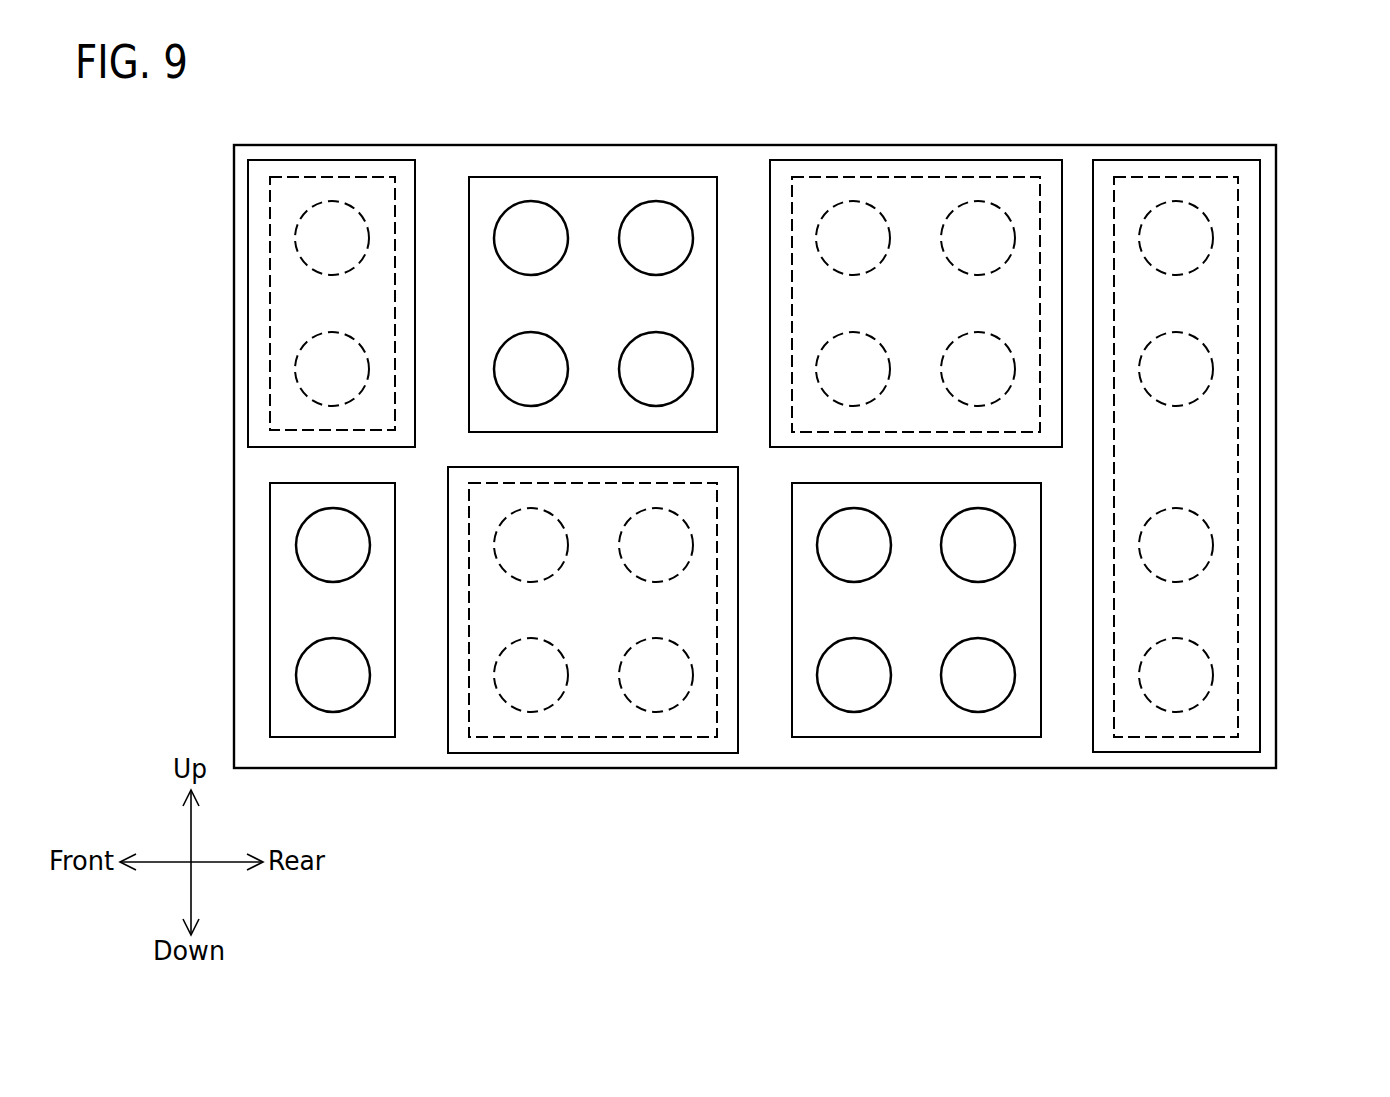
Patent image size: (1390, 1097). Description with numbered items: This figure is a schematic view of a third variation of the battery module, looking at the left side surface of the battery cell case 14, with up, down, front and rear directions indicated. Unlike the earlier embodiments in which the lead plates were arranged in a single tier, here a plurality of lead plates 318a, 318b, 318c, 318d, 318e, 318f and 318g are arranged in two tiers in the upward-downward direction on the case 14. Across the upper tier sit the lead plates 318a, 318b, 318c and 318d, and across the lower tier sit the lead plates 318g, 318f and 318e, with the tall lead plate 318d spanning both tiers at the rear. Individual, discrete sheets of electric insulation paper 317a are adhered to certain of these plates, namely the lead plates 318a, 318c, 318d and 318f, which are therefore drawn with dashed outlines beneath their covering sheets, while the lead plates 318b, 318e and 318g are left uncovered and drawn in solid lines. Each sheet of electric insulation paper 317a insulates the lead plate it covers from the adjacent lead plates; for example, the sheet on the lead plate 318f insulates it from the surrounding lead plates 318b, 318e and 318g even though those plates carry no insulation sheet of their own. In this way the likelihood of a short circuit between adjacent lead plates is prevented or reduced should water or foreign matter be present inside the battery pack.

The battery cell case 14 is at (444, 160).
The electric insulation paper 317a is at (290, 168).
The lead plate 318a is at (330, 183).
The lead plate 318b is at (575, 192).
The lead plate 318c is at (920, 205).
The lead plate 318d is at (1176, 188).
The lead plate 318e is at (898, 722).
The lead plate 318f is at (612, 722).
The lead plate 318g is at (328, 722).